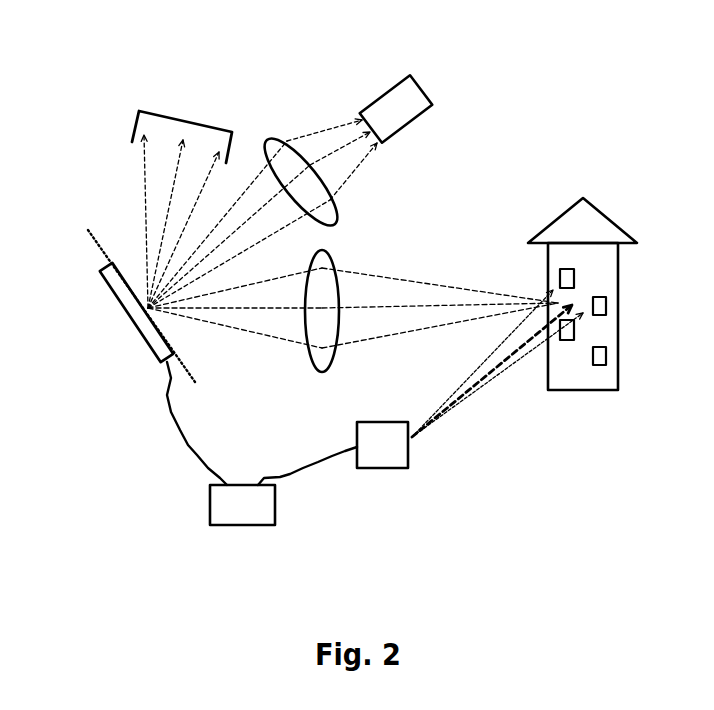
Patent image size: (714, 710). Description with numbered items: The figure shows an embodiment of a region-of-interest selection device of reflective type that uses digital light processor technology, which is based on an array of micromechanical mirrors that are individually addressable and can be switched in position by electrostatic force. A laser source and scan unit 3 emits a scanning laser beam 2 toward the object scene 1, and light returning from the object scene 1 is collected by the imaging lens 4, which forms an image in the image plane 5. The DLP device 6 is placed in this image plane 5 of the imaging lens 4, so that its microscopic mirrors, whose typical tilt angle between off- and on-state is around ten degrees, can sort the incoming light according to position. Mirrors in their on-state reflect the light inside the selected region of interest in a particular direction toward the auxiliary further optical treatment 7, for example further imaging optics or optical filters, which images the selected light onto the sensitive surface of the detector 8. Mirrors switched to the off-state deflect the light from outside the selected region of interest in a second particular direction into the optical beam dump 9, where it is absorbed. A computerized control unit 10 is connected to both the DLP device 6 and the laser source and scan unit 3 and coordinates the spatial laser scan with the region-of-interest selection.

The object scene 1 is at (573, 367).
The scanning laser beam 2 is at (492, 385).
The laser source and scan unit 3 is at (392, 473).
The imaging lens 4 is at (343, 238).
The image plane of imaging 5 is at (88, 230).
The device based on DLP technology 6 is at (135, 312).
The auxiliary further optical treatment of selected light 7 is at (265, 133).
The detector 8 is at (368, 147).
The optical beam dump 9 is at (125, 130).
The computerized control unit 10 is at (218, 505).